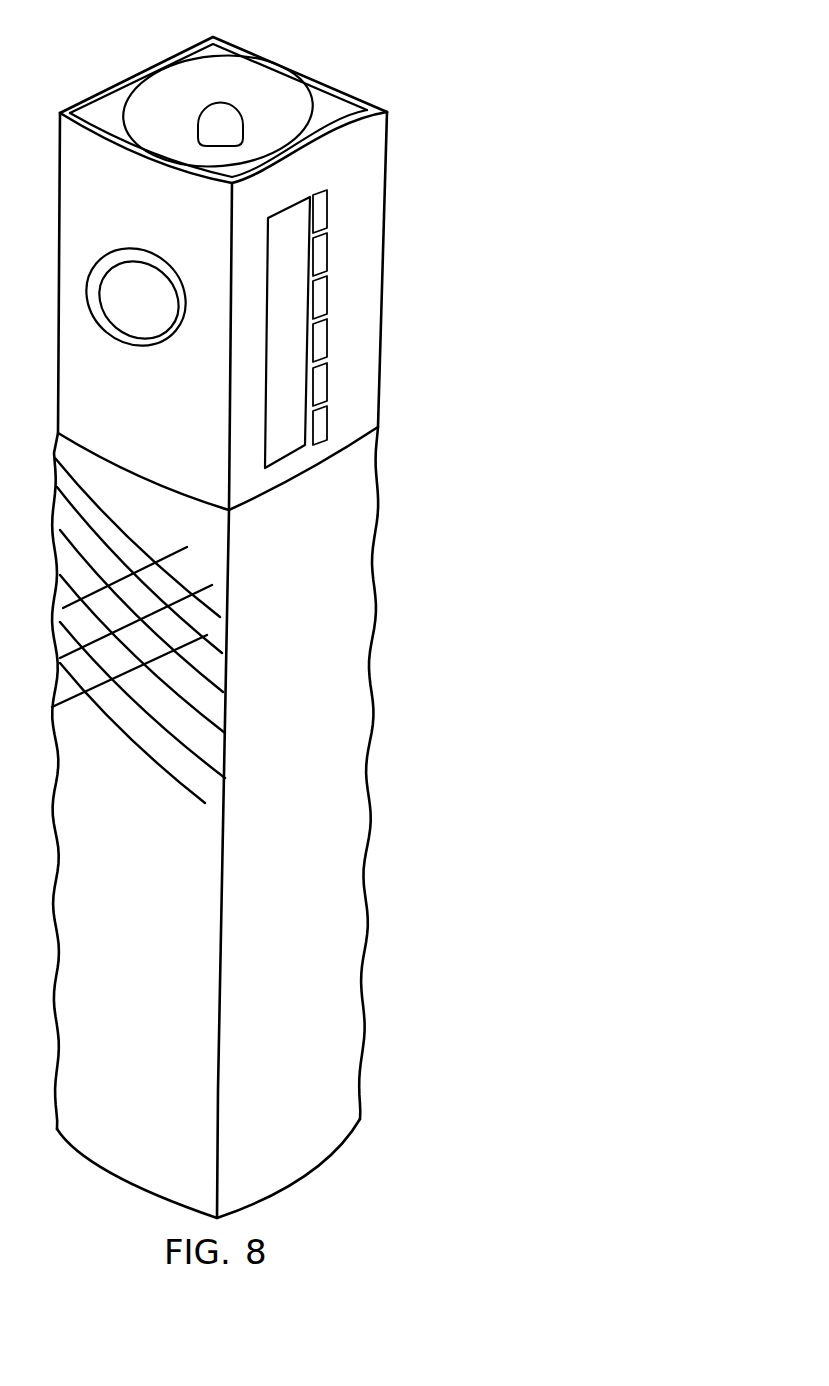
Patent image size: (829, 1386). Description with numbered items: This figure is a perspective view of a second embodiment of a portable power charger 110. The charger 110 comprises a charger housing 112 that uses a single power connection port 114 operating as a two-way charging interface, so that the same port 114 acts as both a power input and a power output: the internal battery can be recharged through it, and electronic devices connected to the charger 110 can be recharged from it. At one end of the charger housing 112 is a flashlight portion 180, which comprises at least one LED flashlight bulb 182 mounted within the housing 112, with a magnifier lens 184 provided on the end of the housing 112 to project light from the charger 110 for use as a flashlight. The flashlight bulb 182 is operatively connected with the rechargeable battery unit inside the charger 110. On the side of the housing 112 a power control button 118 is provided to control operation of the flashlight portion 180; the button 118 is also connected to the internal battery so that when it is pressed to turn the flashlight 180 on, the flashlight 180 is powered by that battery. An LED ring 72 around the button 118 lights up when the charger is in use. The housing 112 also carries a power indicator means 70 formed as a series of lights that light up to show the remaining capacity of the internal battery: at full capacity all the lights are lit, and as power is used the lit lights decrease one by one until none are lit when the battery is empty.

The power indicator means 70 is at (366, 277).
The LED ring 72 is at (150, 260).
The portable power charger 110 is at (430, 570).
The charger housing 112 is at (333, 797).
The power connection port 114 is at (282, 445).
The power control button 118 is at (132, 322).
The flashlight portion 180 is at (342, 59).
The flashlight bulb 182 is at (222, 115).
The magnifier lens 184 is at (158, 100).